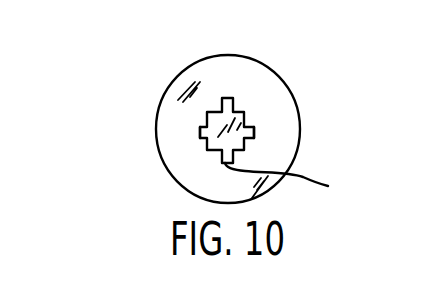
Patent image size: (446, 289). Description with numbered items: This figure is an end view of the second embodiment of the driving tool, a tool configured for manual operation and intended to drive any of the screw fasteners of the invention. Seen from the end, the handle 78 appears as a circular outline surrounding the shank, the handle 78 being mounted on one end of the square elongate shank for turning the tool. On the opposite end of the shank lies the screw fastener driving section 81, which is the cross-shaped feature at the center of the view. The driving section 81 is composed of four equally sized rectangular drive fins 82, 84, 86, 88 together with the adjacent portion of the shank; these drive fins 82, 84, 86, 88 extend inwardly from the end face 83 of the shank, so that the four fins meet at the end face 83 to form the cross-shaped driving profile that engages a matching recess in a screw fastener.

The handle 78 is at (185, 87).
The drive fin 82 is at (226, 98).
The end face 83 is at (247, 124).
The drive fin 84 is at (200, 133).
The drive fin 88 is at (255, 132).
The screw fastener driving section 81 is at (204, 157).
The drive fin 86 is at (293, 182).